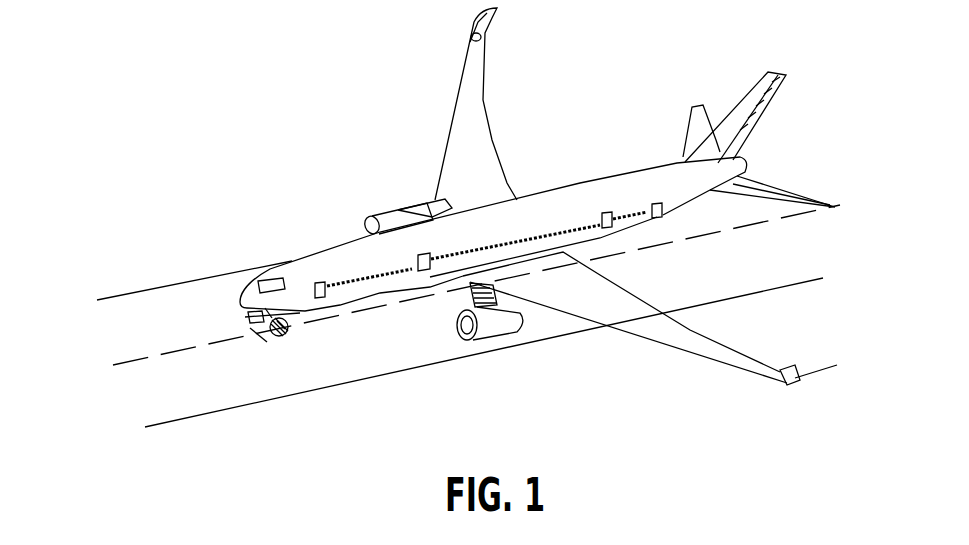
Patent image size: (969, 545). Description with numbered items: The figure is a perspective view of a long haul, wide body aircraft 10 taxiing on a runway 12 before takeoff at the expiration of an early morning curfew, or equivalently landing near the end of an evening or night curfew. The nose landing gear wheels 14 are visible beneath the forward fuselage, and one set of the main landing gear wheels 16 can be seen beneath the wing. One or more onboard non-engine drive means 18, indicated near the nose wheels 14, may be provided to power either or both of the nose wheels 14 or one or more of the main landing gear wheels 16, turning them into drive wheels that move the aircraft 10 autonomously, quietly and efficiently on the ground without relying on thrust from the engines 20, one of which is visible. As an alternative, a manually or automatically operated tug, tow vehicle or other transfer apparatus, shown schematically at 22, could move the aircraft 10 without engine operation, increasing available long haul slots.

The aircraft 10 is at (498, 198).
The runway 12 is at (730, 286).
The nose landing gear wheels 14 is at (250, 323).
The main landing gear wheels 16 is at (457, 307).
The non-engine drive means 18 is at (287, 337).
The engines 20 is at (392, 218).
The tug, tow vehicle, or other transfer apparatus 22 is at (257, 347).